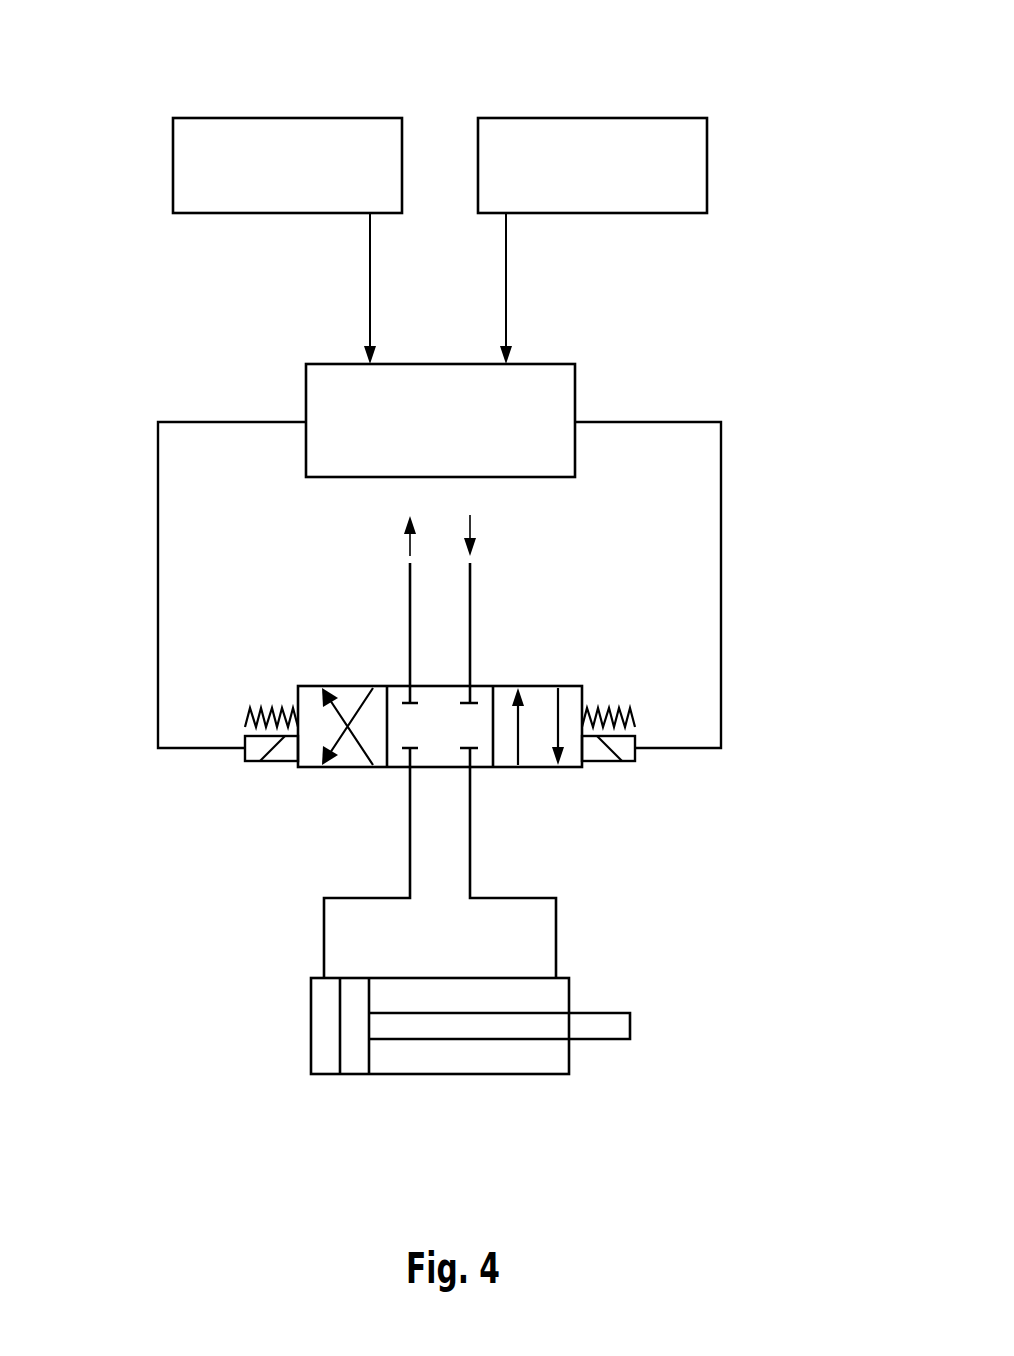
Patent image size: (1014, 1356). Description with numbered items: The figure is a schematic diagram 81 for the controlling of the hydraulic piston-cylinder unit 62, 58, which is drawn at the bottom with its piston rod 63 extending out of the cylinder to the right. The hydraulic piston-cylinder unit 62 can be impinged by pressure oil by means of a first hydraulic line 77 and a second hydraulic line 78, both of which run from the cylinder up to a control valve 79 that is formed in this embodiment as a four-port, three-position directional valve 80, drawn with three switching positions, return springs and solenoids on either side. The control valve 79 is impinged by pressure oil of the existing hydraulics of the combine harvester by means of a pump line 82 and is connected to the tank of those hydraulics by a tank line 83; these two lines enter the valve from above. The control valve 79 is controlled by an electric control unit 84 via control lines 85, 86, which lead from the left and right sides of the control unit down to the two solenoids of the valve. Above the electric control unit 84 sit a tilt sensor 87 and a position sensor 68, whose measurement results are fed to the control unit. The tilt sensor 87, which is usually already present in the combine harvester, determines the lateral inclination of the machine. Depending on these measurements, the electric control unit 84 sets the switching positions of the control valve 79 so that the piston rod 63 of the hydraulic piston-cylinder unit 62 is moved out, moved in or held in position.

The tilt sensor 87 is at (259, 118).
The position sensor 68 is at (585, 118).
The electric control unit 84 is at (576, 378).
The schematic diagram 81 is at (800, 318).
The control line 86 is at (158, 582).
The control line 85 is at (721, 583).
The tank line 83 is at (409, 602).
The pump line 82 is at (471, 602).
The control valve 79 is at (457, 777).
The 4/3 directional valve 80 is at (552, 780).
The second hydraulic line 78 is at (324, 938).
The first hydraulic line 77 is at (556, 938).
The hydraulic piston-cylinder unit 62 is at (440, 1090).
The actuator 58 is at (440, 1026).
The piston rod 63 is at (612, 1041).